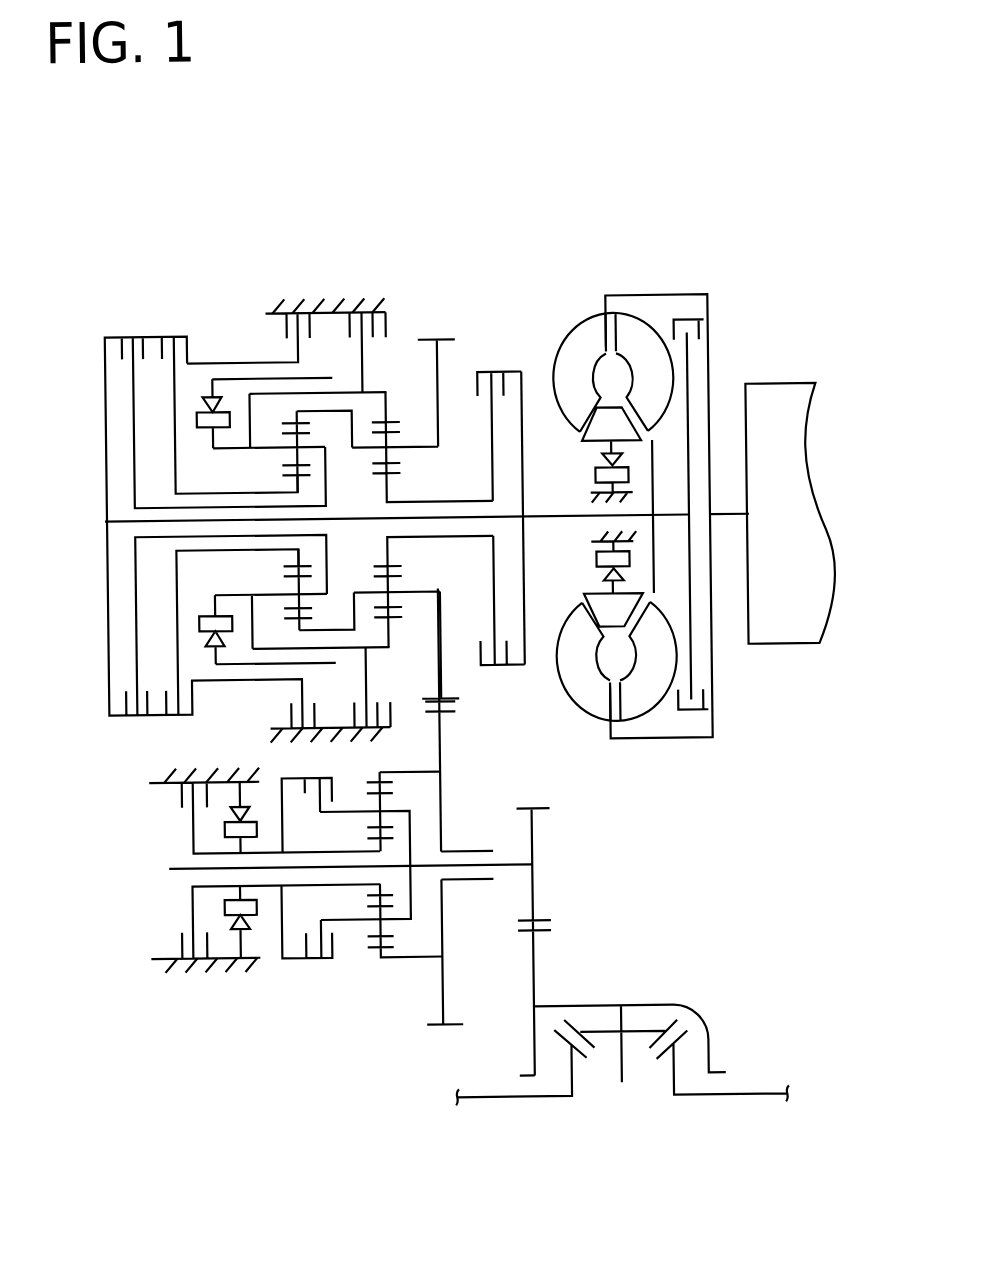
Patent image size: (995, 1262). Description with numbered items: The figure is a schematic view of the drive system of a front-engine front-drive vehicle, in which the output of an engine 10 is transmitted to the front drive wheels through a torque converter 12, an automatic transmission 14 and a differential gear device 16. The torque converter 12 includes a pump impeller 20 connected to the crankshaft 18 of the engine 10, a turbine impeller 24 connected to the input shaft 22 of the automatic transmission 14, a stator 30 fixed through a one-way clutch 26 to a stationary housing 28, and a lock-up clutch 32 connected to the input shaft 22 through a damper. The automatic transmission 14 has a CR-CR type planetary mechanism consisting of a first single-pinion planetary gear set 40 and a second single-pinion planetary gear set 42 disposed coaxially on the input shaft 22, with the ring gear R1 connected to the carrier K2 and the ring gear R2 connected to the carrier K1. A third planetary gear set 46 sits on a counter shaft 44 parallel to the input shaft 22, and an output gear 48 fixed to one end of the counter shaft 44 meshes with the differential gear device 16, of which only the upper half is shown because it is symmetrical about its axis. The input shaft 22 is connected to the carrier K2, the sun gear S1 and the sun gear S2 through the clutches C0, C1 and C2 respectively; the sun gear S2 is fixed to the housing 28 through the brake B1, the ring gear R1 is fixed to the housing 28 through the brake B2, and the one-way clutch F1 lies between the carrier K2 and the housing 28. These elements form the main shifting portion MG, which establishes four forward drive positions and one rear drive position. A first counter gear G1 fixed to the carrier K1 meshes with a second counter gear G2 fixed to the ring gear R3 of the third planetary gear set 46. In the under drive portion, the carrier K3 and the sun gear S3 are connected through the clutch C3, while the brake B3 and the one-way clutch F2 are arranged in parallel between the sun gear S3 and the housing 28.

The engine 10 is at (790, 408).
The torque converter 12 is at (656, 478).
The automatic transmission 14 is at (271, 436).
The differential gear device 16 is at (609, 966).
The crankshaft 18 is at (727, 520).
The pump impeller 20 is at (593, 338).
The input shaft 22 is at (550, 517).
The turbine impeller 24 is at (640, 700).
The one-way clutch 26 is at (600, 618).
The housing 28 is at (336, 305).
The stator 30 is at (605, 436).
The lock-up clutch 32 is at (705, 334).
The first single-pinion planetary gear set 40 is at (422, 477).
The second single-pinion planetary gear set 42 is at (285, 466).
The counter shaft 44 is at (166, 866).
The third planetary gear set 46 is at (366, 915).
The output gear 48 is at (540, 920).
The brake B1 is at (282, 324).
The brake B2 is at (378, 323).
The brake B3 is at (178, 942).
The clutch C0 is at (124, 343).
The clutch C1 is at (499, 372).
The clutch C2 is at (176, 332).
The clutch C3 is at (320, 960).
The one-way clutch F1 is at (200, 418).
The one-way clutch F2 is at (248, 925).
The first counter gear G1 is at (450, 696).
The second counter gear G2 is at (450, 1023).
The carrier K1 is at (418, 447).
The carrier K2 is at (272, 448).
The carrier K3 is at (395, 806).
The ring gear R1 is at (394, 421).
The ring gear R2 is at (305, 423).
The ring gear R3 is at (373, 780).
The sun gear S1 is at (393, 475).
The sun gear S2 is at (285, 475).
The sun gear S3 is at (367, 843).
The main shifting portion MG is at (173, 506).